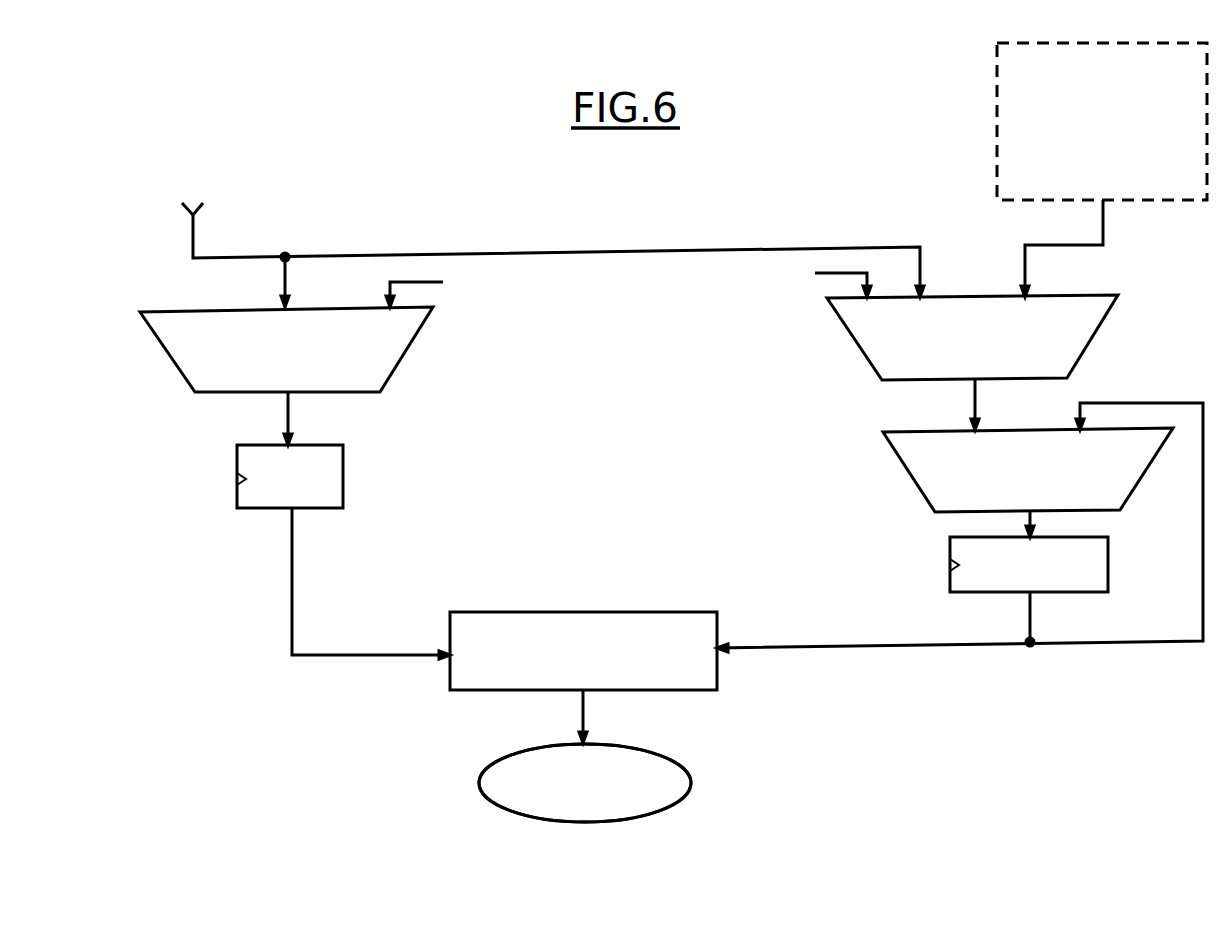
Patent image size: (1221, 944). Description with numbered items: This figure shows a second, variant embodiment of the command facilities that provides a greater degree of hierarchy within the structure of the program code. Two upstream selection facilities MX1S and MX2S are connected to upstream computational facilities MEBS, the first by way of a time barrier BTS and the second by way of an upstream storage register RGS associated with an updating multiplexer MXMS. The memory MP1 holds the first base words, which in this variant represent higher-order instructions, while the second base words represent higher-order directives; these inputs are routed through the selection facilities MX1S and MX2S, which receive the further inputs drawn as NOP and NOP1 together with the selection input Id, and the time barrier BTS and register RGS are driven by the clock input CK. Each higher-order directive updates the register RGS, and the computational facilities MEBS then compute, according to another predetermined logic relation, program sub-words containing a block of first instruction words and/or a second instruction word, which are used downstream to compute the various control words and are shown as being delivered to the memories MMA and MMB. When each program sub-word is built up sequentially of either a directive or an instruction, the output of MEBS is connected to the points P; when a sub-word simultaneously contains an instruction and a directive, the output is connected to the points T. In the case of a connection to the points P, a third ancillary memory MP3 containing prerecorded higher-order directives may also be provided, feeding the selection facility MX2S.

The memory MP1 is at (532, 242).
The third ancillary memory MP3 is at (990, 76).
The no-operation signal NOP is at (445, 289).
The no-operation signal 1 NOP1 is at (808, 279).
The upstream selection facility MX1S is at (286, 349).
The upstream selection facility MX2S is at (972, 337).
The updating multiplexer MXMS is at (1028, 470).
The time barrier BTS is at (343, 477).
The upstream storage register RGS is at (1108, 563).
The upstream computational facilities MEBS is at (583, 651).
The memory A MMA is at (585, 783).
The memory B MMB is at (585, 783).
The clock signal CK is at (237, 479).
The identification signal Id is at (166, 353).
The points P is at (547, 822).
The points T is at (623, 822).